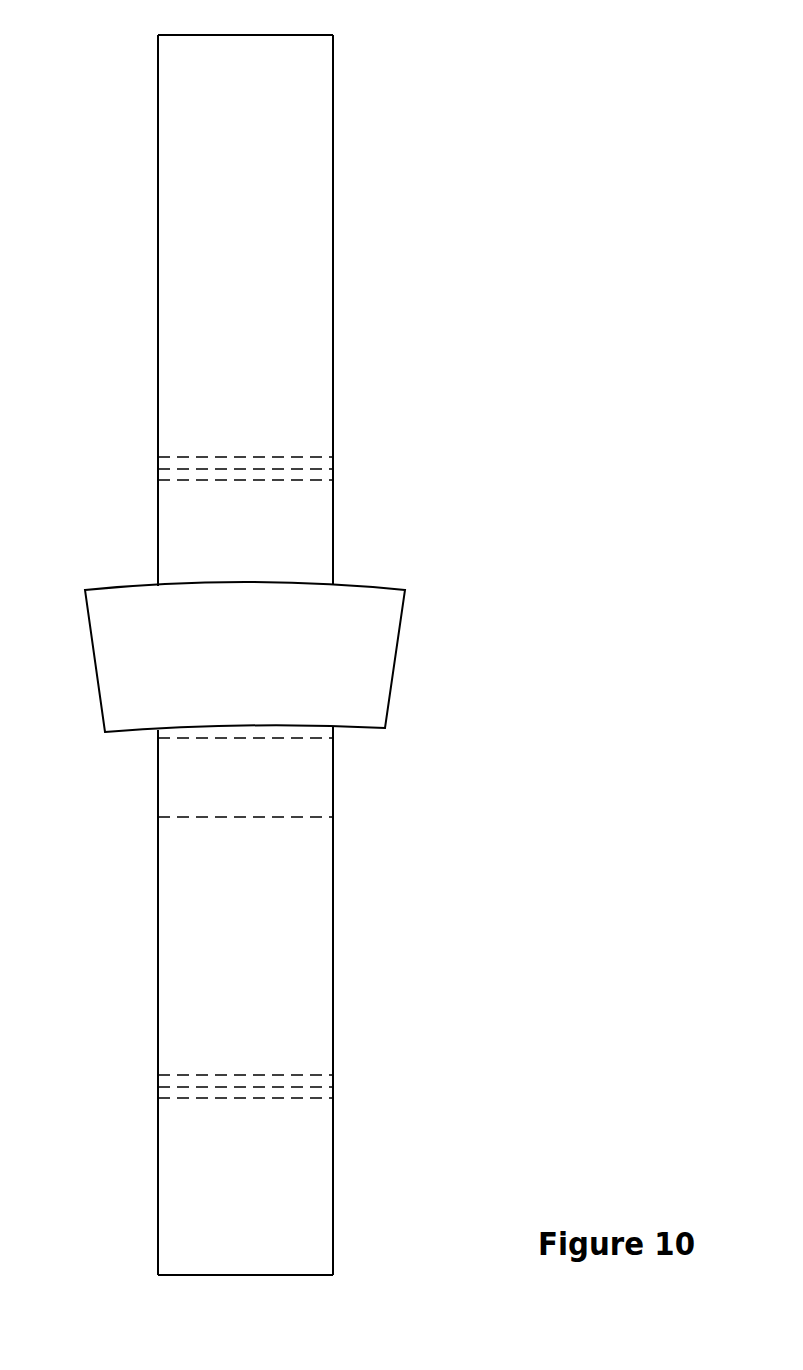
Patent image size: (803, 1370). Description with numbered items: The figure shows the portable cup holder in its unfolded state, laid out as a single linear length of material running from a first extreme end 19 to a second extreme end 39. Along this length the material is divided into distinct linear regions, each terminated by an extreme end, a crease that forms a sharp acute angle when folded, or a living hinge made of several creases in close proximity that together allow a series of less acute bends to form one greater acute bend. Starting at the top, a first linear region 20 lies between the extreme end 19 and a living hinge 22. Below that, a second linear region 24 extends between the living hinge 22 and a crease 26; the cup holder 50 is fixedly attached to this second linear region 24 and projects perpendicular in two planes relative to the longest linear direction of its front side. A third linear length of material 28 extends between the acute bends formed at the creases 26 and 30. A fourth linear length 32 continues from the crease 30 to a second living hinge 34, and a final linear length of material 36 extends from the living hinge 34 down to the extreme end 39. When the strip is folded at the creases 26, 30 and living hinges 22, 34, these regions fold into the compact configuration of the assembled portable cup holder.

The first extreme end 19 is at (160, 36).
The first linear region 20 is at (322, 328).
The living hinge 22 is at (333, 472).
The second linear region 24 is at (307, 549).
The cup holder 50 is at (342, 659).
The crease 26 is at (307, 740).
The third linear length of material 28 is at (295, 790).
The crease 30 is at (313, 820).
The fourth linear length 32 is at (288, 983).
The living hinge 34 is at (307, 1093).
The final linear length of material 36 is at (290, 1220).
The second extreme end 39 is at (178, 1270).